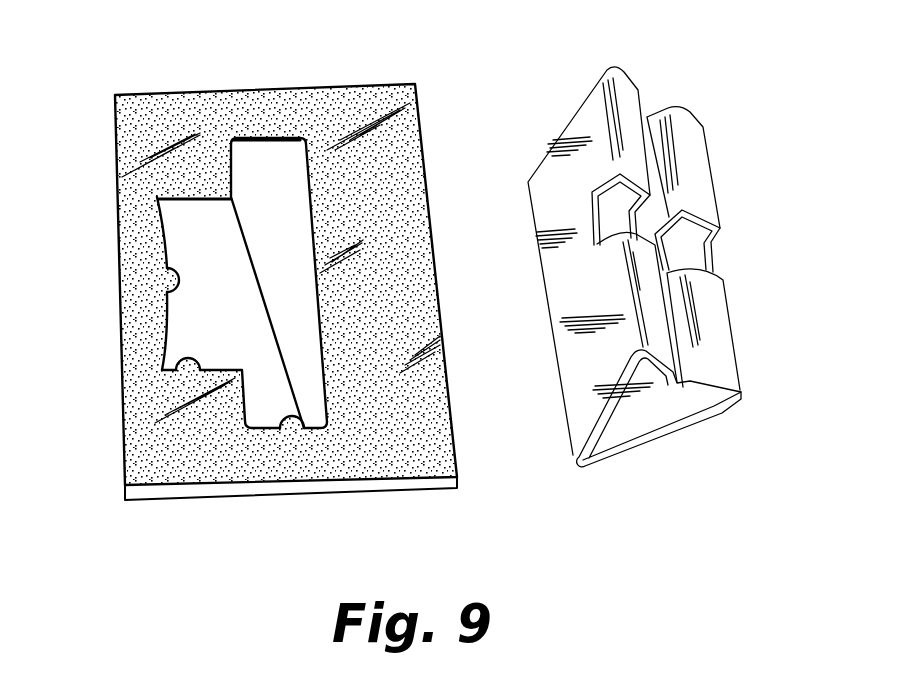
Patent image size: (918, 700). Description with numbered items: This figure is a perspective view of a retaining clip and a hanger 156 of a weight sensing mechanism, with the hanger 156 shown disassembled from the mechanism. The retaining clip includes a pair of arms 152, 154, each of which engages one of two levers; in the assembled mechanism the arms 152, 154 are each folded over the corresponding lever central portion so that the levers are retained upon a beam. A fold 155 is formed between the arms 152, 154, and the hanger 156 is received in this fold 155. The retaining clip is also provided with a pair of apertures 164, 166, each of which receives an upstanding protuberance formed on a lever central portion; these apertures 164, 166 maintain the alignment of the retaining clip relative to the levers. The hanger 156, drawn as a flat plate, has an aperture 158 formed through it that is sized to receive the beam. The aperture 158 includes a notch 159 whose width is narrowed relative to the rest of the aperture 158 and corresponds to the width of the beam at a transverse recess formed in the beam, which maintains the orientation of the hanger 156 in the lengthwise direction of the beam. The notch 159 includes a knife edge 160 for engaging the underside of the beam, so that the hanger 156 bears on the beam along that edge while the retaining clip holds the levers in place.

The arm 152 is at (641, 249).
The arm 154 is at (632, 433).
The fold 155 is at (643, 120).
The hanger 156 is at (274, 495).
The aperture 158 is at (300, 437).
The notch 159 is at (172, 378).
The knife edge 160 is at (172, 268).
The aperture 164 is at (607, 213).
The aperture 166 is at (686, 262).